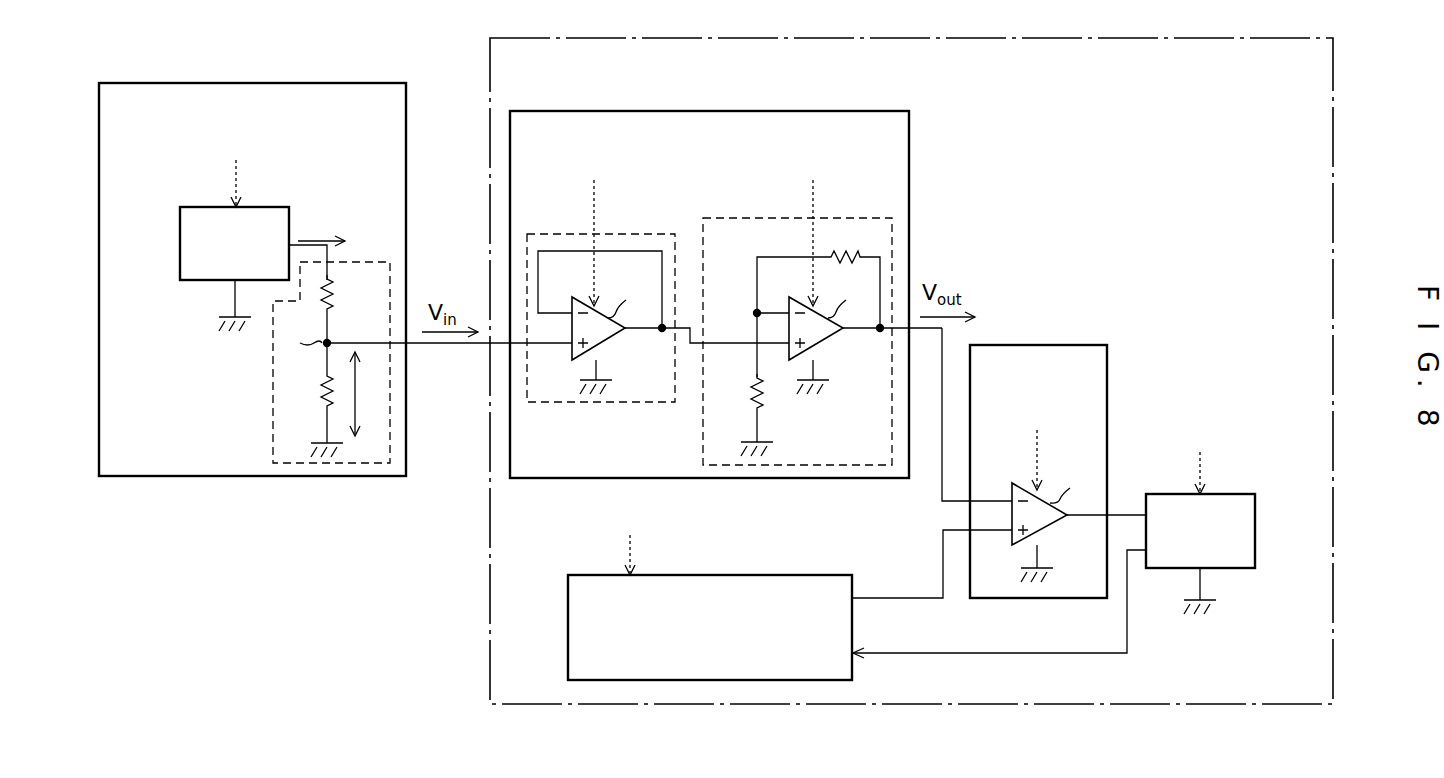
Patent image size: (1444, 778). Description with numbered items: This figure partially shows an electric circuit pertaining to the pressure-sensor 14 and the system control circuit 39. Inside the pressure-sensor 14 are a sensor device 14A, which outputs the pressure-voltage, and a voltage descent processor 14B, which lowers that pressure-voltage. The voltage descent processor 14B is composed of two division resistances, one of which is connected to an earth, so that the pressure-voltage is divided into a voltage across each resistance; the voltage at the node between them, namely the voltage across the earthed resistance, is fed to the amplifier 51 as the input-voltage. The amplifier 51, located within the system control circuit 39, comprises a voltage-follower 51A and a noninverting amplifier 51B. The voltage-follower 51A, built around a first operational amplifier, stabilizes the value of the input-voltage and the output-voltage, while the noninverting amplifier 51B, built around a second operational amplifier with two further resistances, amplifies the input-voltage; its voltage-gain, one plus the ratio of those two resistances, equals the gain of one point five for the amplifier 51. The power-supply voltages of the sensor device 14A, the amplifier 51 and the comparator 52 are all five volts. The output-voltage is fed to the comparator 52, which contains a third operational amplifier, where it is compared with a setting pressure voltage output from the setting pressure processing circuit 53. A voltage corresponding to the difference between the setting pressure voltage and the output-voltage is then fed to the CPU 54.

The pressure-sensor 14 is at (250, 83).
The sensor device 14A is at (180, 243).
The voltage descent processor 14B is at (273, 391).
The system control circuit 39 is at (490, 597).
The amplifier 51 is at (712, 111).
The voltage-follower 51A is at (662, 218).
The noninverting amplifier 51B is at (731, 218).
The comparator 52 is at (1063, 345).
The setting pressure processing circuit 53 is at (713, 575).
The CPU 54 is at (1257, 531).